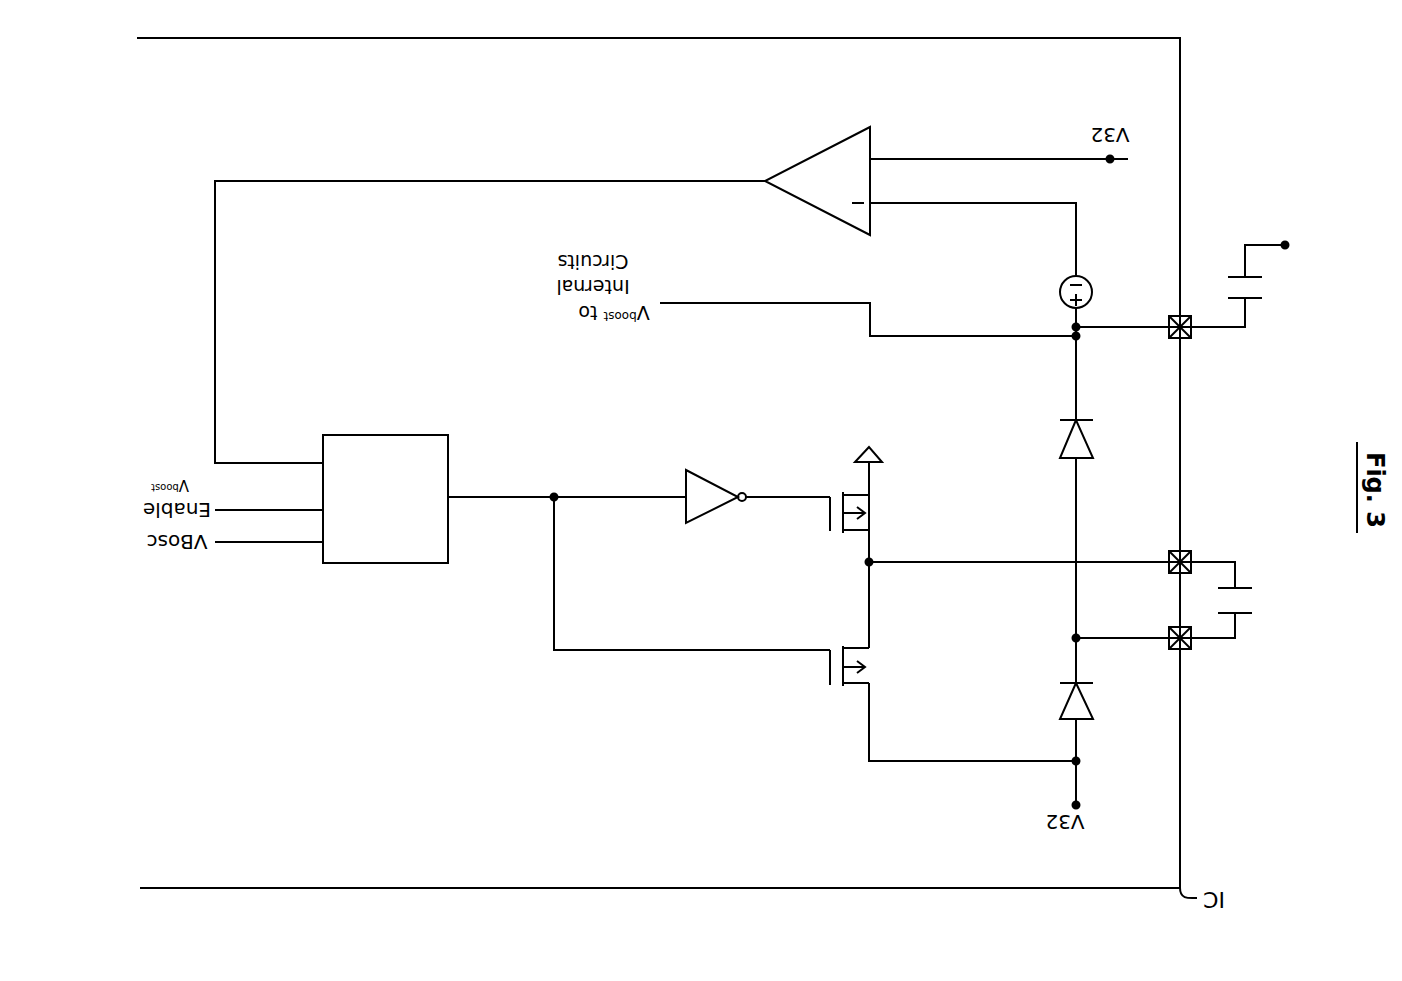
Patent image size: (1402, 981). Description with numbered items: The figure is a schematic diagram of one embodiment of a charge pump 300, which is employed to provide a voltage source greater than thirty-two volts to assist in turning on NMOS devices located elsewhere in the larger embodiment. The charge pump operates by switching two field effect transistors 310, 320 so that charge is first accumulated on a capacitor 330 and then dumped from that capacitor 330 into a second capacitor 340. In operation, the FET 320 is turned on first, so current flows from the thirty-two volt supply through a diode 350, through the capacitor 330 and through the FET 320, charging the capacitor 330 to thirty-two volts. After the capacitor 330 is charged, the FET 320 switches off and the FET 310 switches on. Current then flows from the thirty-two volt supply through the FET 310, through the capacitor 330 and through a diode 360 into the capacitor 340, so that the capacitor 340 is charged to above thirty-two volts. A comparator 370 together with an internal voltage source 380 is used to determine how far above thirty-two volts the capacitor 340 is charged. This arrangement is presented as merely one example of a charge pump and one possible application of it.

The boost circuit / integrated circuit 300 is at (1190, 149).
The field effect transistor 310 is at (849, 683).
The field effect transistor 320 is at (849, 495).
The capacitor 330 is at (1240, 615).
The capacitor 340 is at (1248, 300).
The diode 350 is at (1082, 720).
The diode 360 is at (1084, 459).
The comparator 370 is at (815, 158).
The internal voltage source 380 is at (1064, 281).